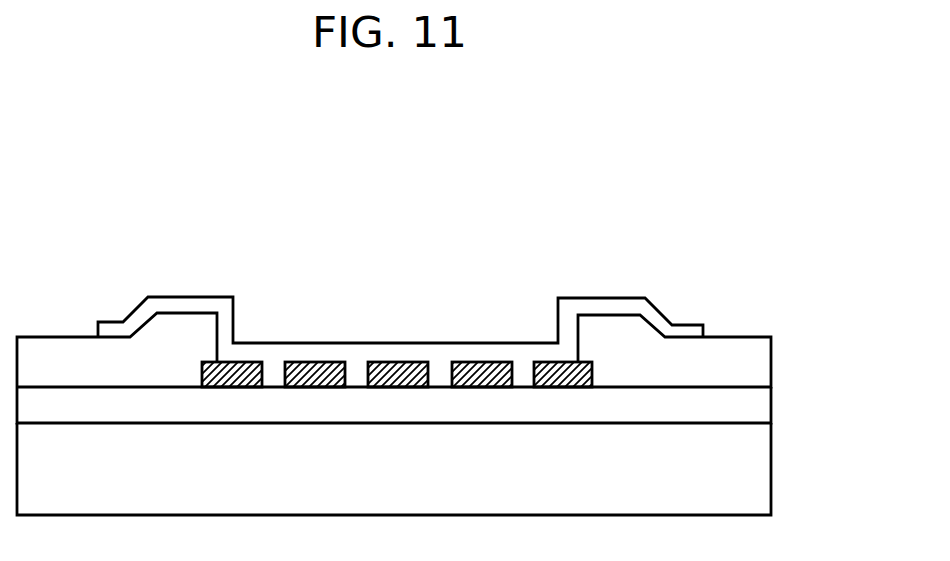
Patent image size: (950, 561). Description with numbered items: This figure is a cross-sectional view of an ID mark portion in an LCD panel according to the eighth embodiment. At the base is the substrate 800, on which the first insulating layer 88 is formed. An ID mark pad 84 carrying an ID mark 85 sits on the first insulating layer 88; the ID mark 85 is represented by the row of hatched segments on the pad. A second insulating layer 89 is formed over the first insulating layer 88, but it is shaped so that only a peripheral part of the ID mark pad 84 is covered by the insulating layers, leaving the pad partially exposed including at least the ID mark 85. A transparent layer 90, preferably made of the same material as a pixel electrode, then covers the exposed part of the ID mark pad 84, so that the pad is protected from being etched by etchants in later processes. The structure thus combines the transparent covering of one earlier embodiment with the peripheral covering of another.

The ID mark pad 84 is at (592, 435).
The ID mark 85 is at (523, 370).
The first insulating layer 88 is at (743, 408).
The second insulating layer 89 is at (753, 363).
The transparent layer 90 is at (650, 317).
The substrate 800 is at (755, 478).